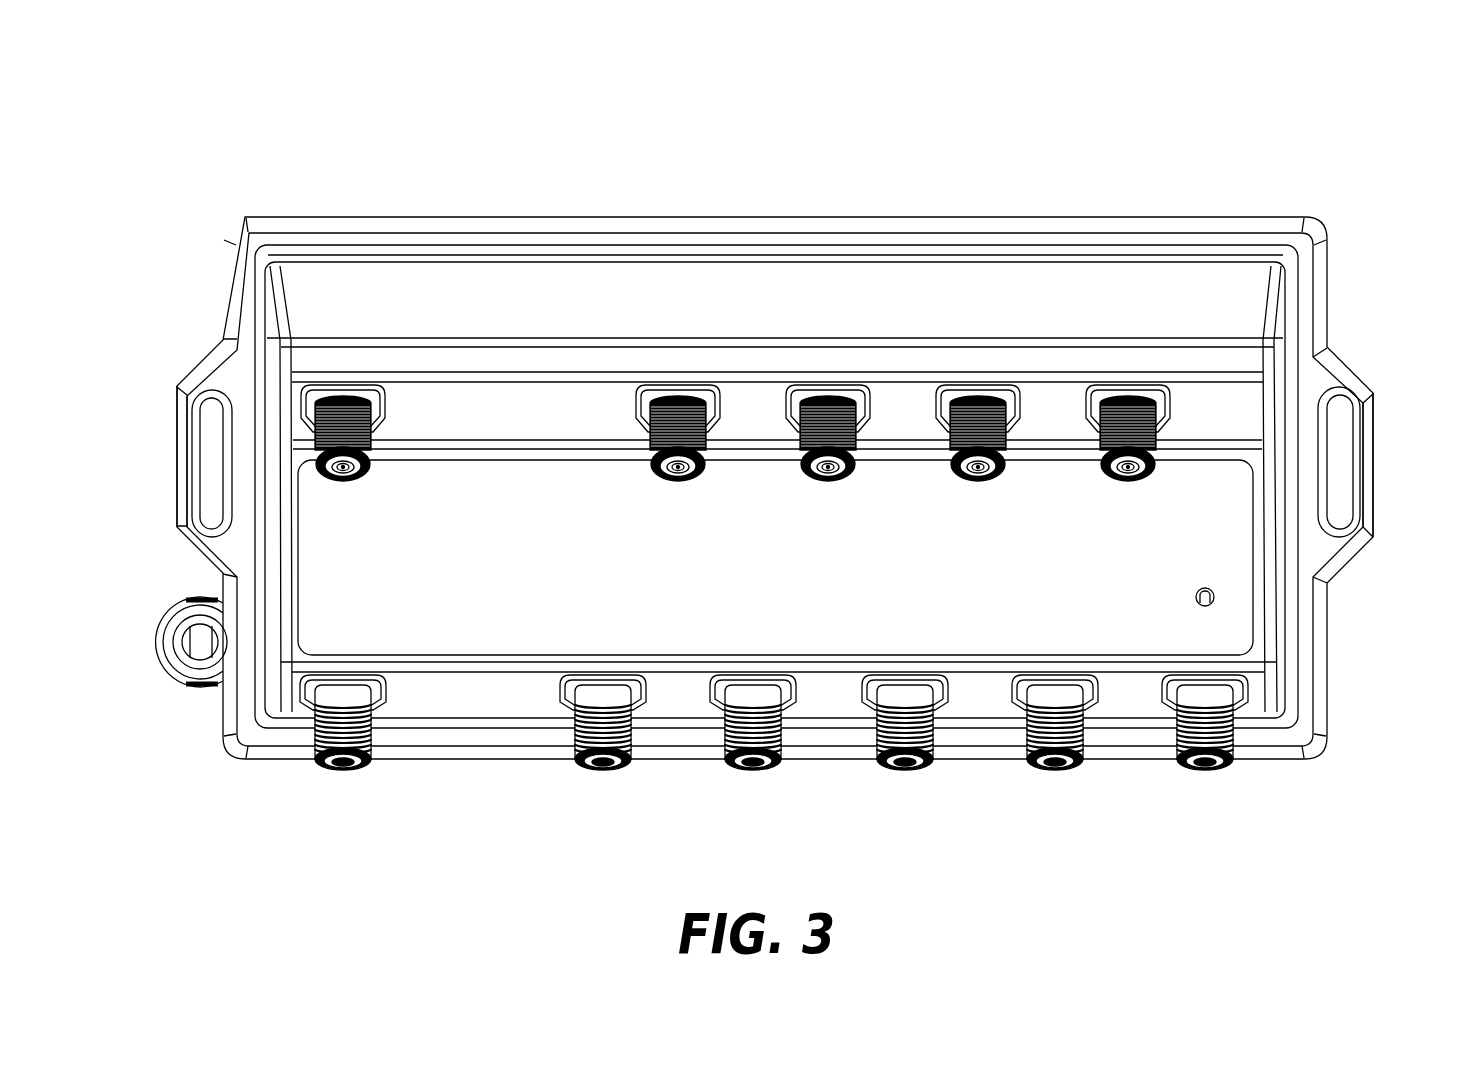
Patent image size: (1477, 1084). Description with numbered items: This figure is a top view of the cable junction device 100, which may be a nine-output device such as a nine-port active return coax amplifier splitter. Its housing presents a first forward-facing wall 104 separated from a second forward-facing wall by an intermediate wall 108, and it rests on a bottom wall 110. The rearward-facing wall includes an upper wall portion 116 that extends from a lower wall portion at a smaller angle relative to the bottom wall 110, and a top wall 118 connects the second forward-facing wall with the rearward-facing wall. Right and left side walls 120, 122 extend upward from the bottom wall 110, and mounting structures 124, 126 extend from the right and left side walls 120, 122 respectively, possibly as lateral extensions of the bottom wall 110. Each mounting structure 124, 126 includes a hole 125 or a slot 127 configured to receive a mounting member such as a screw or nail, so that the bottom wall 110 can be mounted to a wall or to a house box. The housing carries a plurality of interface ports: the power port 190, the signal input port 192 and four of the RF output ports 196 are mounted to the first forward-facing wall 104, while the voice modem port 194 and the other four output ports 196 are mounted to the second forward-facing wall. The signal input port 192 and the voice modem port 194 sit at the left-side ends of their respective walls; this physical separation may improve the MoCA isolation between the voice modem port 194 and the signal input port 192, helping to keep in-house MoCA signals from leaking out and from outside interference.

The cable junction device 100 is at (1289, 146).
The first forward-facing wall 104 is at (480, 706).
The intermediate wall 108 is at (793, 568).
The bottom wall 110 is at (1302, 742).
The upper wall portion 116 is at (498, 275).
The top wall 118 is at (415, 362).
The right side wall 120 is at (1280, 365).
The left side wall 122 is at (270, 350).
The mounting structure 124 is at (172, 683).
The hole 125 is at (195, 641).
The mounting structure 126 is at (190, 526).
The slot 127 is at (212, 447).
The power port 190 is at (1205, 775).
The signal input port 192 is at (343, 775).
The voice modem port 194 is at (332, 390).
The RF output ports 196 is at (678, 395).